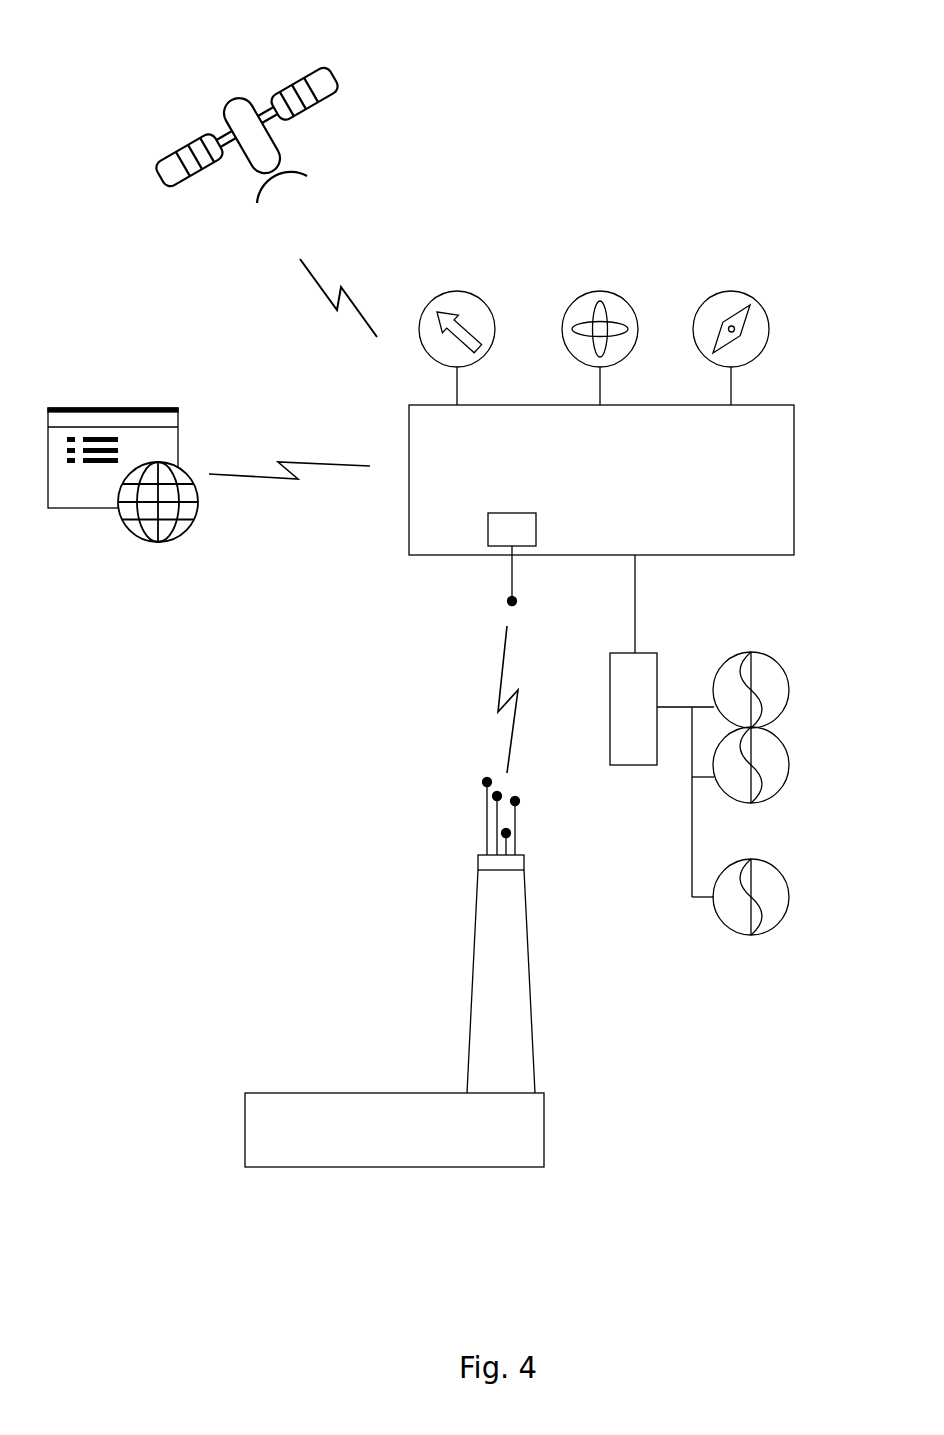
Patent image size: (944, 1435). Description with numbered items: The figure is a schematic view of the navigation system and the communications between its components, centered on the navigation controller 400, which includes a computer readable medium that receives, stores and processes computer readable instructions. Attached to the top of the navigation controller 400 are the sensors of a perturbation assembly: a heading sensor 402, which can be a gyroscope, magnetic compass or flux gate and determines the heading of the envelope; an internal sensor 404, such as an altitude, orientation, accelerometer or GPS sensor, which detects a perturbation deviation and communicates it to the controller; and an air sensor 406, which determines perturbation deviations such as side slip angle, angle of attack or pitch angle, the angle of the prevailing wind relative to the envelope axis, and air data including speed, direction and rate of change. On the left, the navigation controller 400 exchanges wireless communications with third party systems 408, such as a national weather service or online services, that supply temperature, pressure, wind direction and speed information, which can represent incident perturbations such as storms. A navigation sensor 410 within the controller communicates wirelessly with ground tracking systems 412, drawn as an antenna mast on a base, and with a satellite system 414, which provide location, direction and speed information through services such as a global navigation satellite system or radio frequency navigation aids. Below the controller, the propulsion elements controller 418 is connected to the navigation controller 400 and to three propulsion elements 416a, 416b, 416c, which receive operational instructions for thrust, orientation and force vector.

The navigation controller 400 is at (794, 445).
The heading sensor 402 is at (768, 327).
The internal sensor 404 is at (637, 326).
The air sensor 406 is at (493, 326).
The third party systems 408 is at (147, 408).
The navigation sensor 410 is at (488, 521).
The ground tracking systems 412 is at (347, 1093).
The satellite system 414 is at (343, 90).
The propulsion element 416a is at (780, 663).
The propulsion element 416b is at (788, 765).
The propulsion element 416c is at (785, 877).
The propulsion elements controller 418 is at (610, 662).